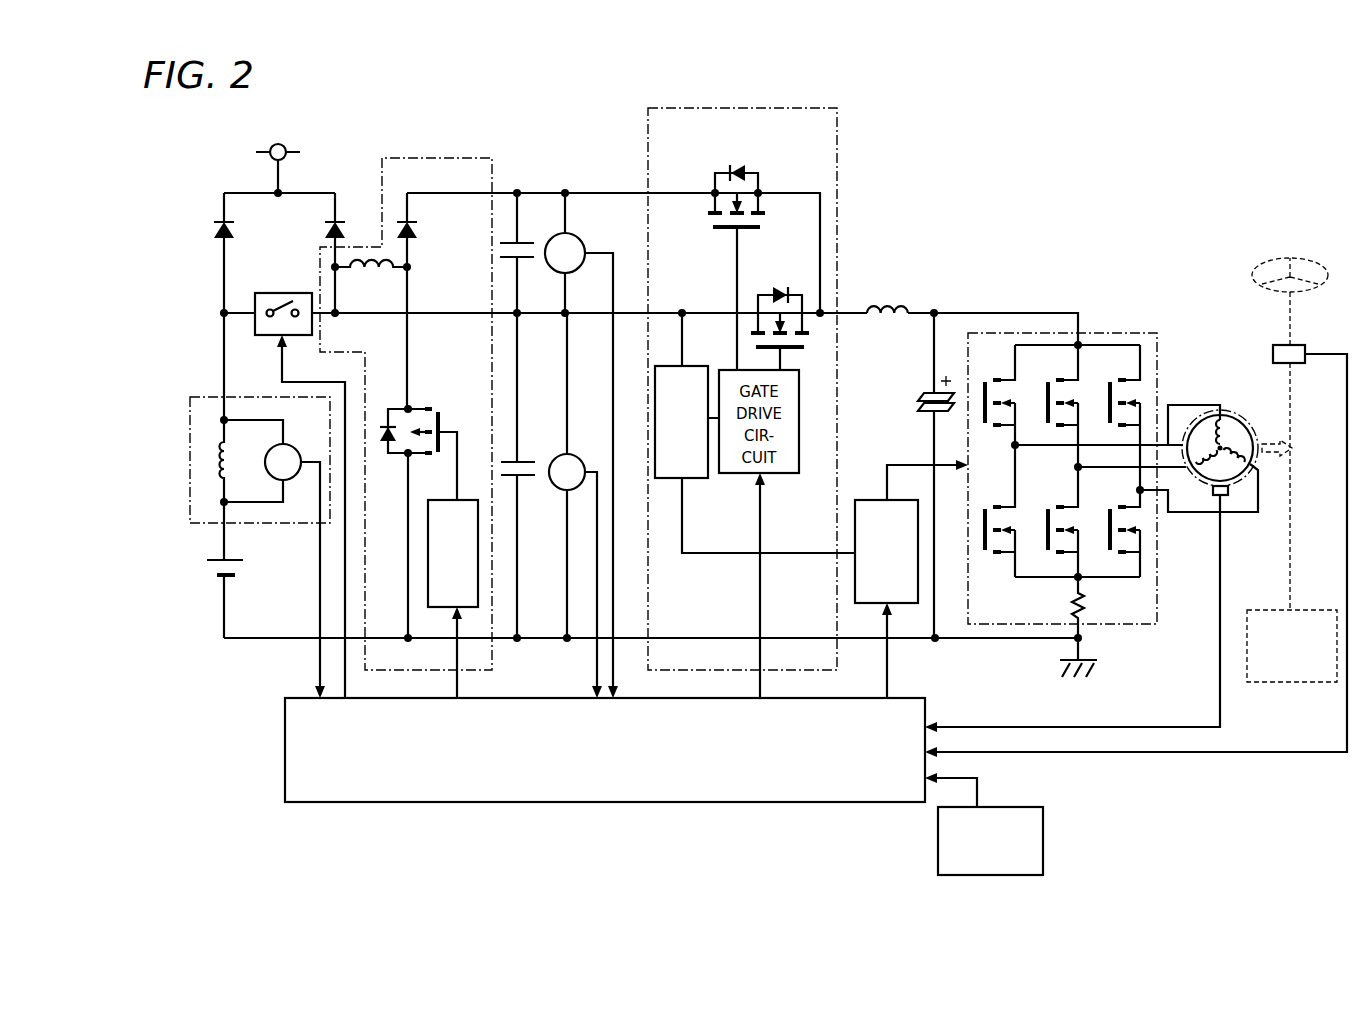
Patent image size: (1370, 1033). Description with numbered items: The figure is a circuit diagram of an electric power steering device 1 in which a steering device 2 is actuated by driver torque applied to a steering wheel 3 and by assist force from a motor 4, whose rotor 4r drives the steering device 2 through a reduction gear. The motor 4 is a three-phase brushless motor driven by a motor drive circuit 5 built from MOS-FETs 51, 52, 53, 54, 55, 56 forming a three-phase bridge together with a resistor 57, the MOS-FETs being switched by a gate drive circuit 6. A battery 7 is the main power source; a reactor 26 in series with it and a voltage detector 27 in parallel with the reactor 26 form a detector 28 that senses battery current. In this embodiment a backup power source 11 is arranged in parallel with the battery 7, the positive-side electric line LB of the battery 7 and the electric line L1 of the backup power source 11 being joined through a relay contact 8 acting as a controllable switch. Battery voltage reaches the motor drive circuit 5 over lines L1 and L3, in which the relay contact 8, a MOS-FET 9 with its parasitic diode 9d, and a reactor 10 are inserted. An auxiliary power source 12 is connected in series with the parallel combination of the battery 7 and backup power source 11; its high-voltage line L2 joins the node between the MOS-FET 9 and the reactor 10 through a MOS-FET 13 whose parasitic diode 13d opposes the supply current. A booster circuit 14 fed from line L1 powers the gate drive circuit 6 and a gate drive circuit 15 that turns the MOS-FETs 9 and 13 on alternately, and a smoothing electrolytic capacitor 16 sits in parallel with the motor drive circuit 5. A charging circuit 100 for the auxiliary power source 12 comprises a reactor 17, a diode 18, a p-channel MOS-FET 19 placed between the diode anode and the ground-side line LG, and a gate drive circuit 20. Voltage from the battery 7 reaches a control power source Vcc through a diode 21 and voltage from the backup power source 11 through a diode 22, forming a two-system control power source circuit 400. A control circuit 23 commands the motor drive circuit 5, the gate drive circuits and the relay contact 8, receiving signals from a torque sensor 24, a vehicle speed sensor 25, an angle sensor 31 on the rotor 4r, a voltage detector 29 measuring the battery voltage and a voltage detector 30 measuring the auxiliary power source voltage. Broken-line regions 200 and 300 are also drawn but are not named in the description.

The electric power steering device 1 is at (1056, 210).
The steering device 2 is at (1308, 610).
The steering wheel 3 is at (1264, 262).
The motor 4 is at (1252, 425).
The rotor 4r is at (1249, 419).
The motor drive circuit 5 is at (1112, 333).
The gate drive circuit 6 is at (878, 500).
The battery 7 is at (240, 558).
The relay contact 8 is at (282, 293).
The MOS-FET 9 is at (793, 351).
The parasitic diode 9d is at (781, 292).
The reactor 10 is at (889, 306).
The backup power source 11 is at (524, 462).
The auxiliary power source 12 is at (524, 243).
The MOS-FET 13 is at (733, 231).
The parasitic diode 13d is at (737, 169).
The booster circuit 14 is at (708, 477).
The gate drive circuit 15 is at (710, 383).
The smoothing electrolytic capacitor 16 is at (927, 395).
The reactor 17 is at (352, 272).
The diode 18 is at (416, 231).
The p-channel MOS-FET 19 is at (428, 409).
The gate drive circuit 20 is at (460, 500).
The diode 21 is at (231, 228).
The diode 22 is at (342, 228).
The control circuit 23 is at (622, 802).
The torque sensor 24 is at (1278, 345).
The vehicle speed sensor 25 is at (1000, 807).
The reactor 26 is at (220, 457).
The voltage detector 27 is at (294, 446).
The detector 28 is at (208, 397).
The voltage detector 29 is at (578, 457).
The voltage detector 30 is at (581, 238).
The angle sensor 31 is at (1229, 495).
The MOS-FET 51 is at (996, 380).
The MOS-FET 52 is at (1058, 380).
The MOS-FET 53 is at (1120, 380).
The MOS-FET 54 is at (996, 507).
The MOS-FET 55 is at (1059, 507).
The MOS-FET 56 is at (1120, 507).
The resistor 57 is at (1072, 604).
The charging circuit 100 is at (492, 158).
The power supply relay circuit 200 is at (648, 146).
The power supply unit 300 is at (633, 97).
The control power source circuit 400 is at (234, 167).
The electric line L1 is at (632, 313).
The high voltage side electric line L2 is at (620, 193).
The electric line L3 is at (990, 313).
The positive-side electric line LB is at (237, 315).
The ground side electric line LG is at (632, 638).
The control power source Vcc is at (278, 156).